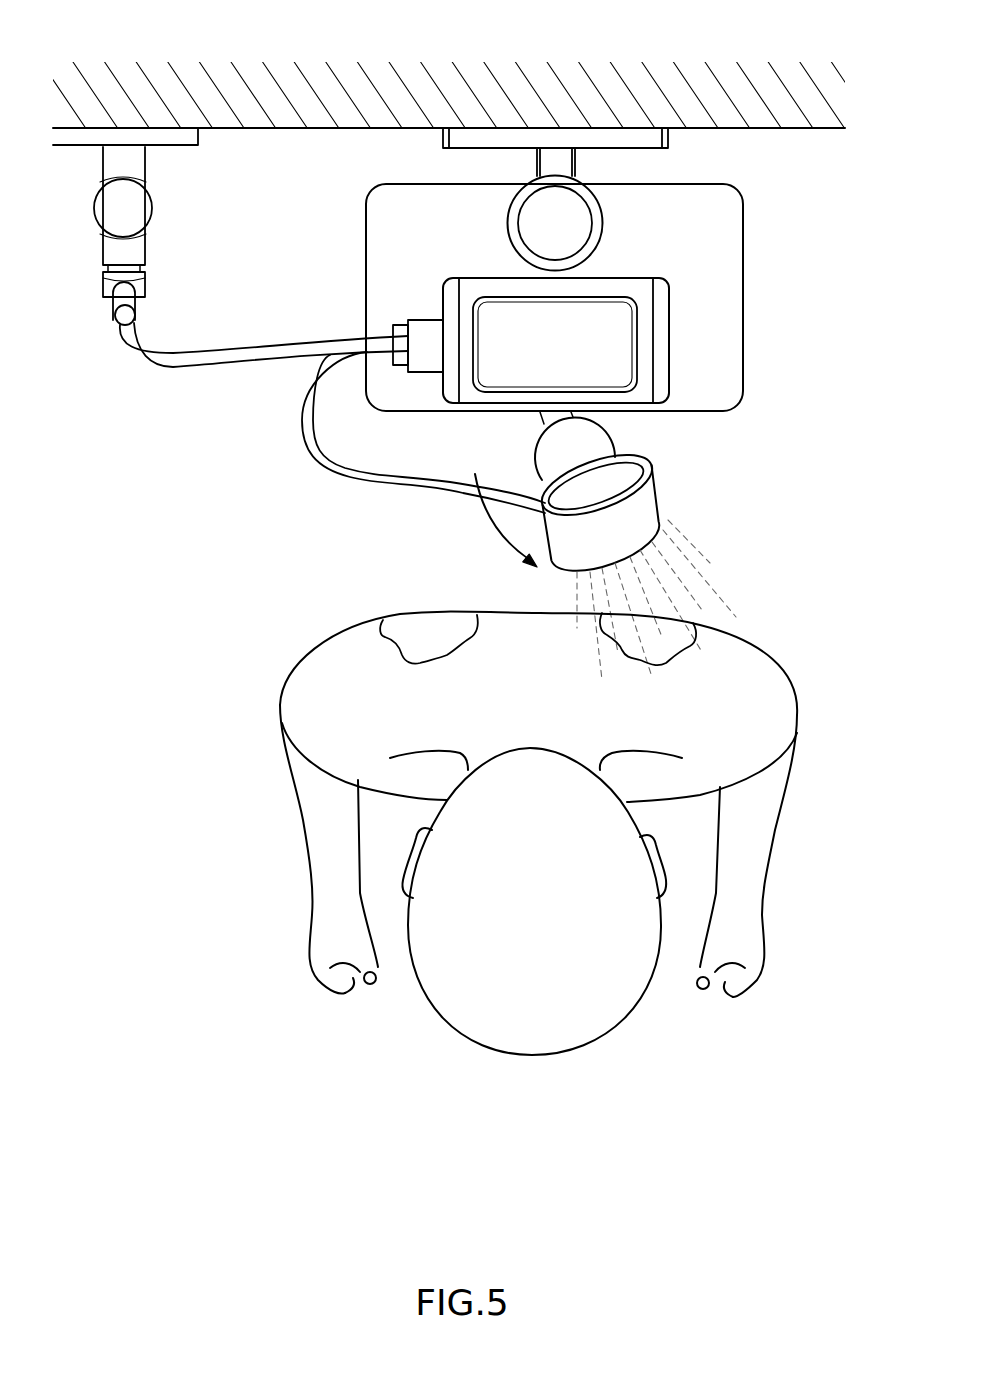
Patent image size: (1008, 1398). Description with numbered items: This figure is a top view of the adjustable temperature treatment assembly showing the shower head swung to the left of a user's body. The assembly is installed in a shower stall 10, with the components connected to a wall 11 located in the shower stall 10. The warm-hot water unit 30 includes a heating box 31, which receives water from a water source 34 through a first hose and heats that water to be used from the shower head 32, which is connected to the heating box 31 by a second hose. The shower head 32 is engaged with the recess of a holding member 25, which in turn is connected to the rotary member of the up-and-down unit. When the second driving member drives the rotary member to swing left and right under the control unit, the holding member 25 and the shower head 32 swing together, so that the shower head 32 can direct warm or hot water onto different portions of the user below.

The shower stall 10 is at (458, 156).
The wall 11 is at (307, 128).
The holding member 25 is at (530, 435).
The warm-hot water unit 30 is at (620, 414).
The heating box 31 is at (657, 345).
The shower head 32 is at (673, 540).
The water source 34 is at (127, 160).